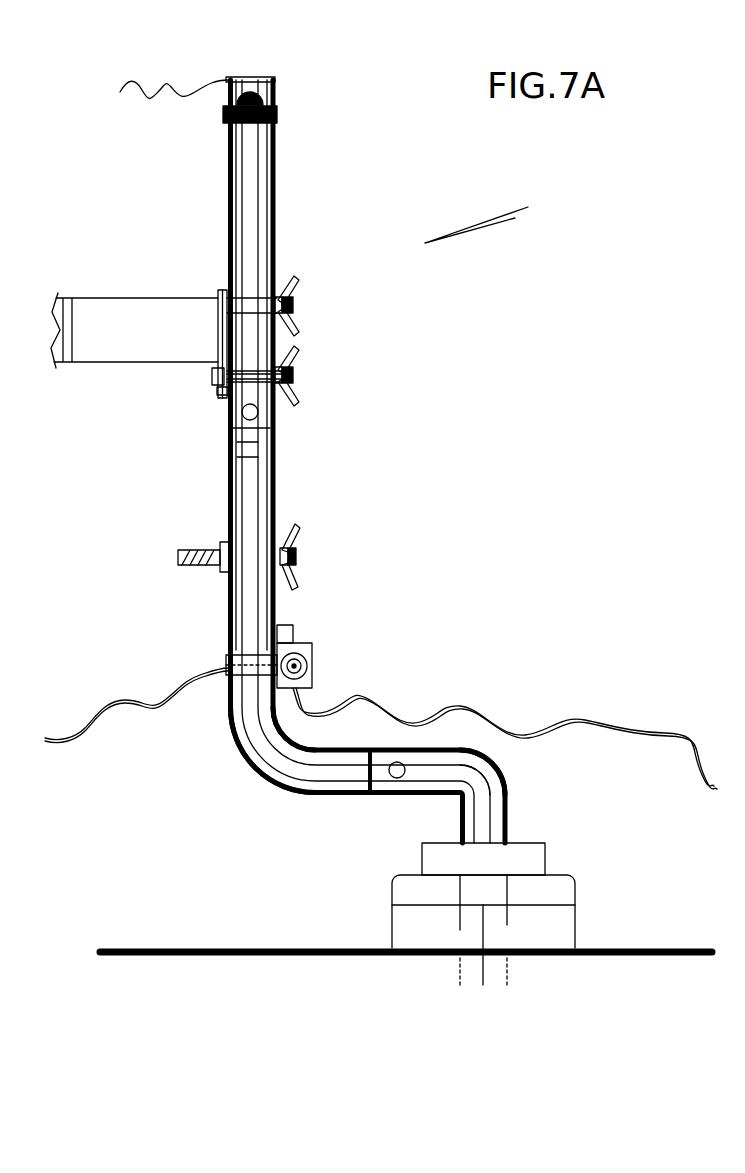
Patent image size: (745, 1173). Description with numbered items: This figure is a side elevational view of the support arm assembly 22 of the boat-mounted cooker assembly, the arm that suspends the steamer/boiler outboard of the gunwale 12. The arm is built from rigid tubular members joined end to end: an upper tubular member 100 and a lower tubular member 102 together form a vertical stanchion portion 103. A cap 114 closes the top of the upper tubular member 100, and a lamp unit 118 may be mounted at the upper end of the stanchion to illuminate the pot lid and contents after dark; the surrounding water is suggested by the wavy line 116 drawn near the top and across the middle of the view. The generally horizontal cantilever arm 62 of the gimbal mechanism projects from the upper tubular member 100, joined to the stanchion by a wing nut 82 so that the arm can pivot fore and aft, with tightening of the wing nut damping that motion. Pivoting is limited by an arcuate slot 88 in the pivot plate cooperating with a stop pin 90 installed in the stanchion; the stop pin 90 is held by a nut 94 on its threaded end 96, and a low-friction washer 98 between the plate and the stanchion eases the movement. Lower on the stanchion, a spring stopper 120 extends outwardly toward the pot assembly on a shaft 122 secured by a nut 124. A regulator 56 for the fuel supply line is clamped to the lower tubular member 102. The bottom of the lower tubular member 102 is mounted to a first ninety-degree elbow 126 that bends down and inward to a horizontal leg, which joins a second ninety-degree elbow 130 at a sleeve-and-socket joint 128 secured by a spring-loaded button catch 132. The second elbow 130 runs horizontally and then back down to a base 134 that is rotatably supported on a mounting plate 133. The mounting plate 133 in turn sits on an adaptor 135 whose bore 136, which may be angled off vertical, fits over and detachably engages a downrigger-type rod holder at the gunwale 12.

The gunwale 12 is at (265, 948).
The support arm assembly 22 is at (494, 216).
The regulator 56 is at (314, 667).
The cantilever arm 62 is at (98, 320).
The wing nut 82 is at (222, 292).
The arcuate slot 88 is at (218, 390).
The stop pin 90 is at (213, 373).
The nut 94 is at (295, 392).
The threaded end 96 is at (295, 370).
The low-friction washer 98 is at (222, 395).
The upper tubular member 100 is at (245, 228).
The lower tubular member 102 is at (277, 500).
The vertical stanchion portion 103 is at (297, 466).
The cap 114 is at (275, 82).
The water line 116 is at (150, 100).
The lamp unit 118 is at (278, 118).
The spring stopper 120 is at (178, 565).
The shaft 122 is at (298, 552).
The nut 124 is at (298, 580).
The first 90° elbow 126 is at (243, 762).
The sleeve-and-socket joint 128 is at (367, 795).
The second 90° elbow 130 is at (488, 766).
The spring-loaded button catch 132 is at (397, 780).
The mounting plate 133 is at (548, 887).
The base 134 is at (523, 853).
The adaptor 135 is at (385, 920).
The bore 136 is at (507, 938).